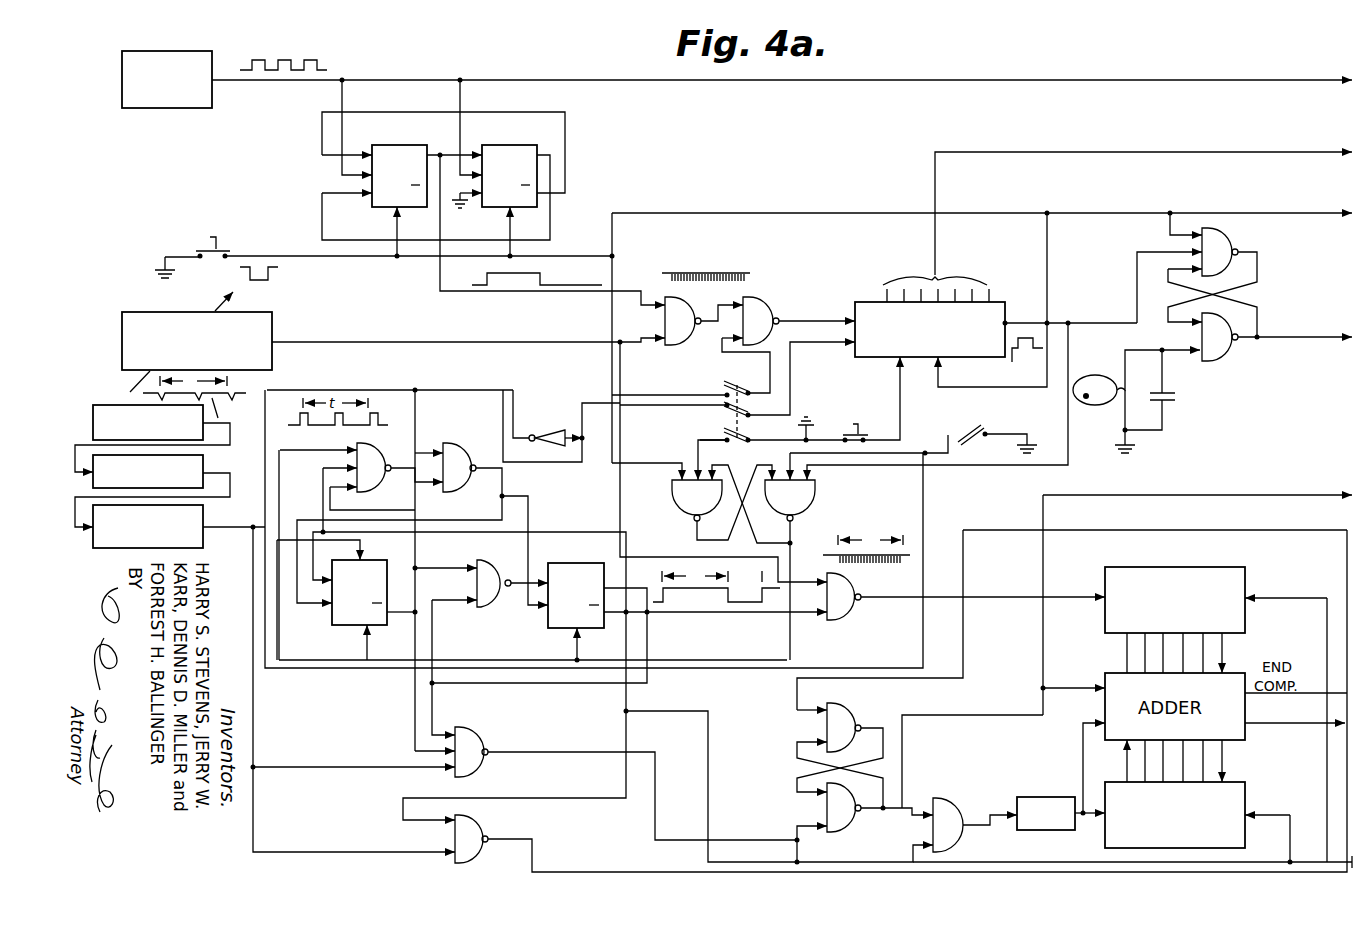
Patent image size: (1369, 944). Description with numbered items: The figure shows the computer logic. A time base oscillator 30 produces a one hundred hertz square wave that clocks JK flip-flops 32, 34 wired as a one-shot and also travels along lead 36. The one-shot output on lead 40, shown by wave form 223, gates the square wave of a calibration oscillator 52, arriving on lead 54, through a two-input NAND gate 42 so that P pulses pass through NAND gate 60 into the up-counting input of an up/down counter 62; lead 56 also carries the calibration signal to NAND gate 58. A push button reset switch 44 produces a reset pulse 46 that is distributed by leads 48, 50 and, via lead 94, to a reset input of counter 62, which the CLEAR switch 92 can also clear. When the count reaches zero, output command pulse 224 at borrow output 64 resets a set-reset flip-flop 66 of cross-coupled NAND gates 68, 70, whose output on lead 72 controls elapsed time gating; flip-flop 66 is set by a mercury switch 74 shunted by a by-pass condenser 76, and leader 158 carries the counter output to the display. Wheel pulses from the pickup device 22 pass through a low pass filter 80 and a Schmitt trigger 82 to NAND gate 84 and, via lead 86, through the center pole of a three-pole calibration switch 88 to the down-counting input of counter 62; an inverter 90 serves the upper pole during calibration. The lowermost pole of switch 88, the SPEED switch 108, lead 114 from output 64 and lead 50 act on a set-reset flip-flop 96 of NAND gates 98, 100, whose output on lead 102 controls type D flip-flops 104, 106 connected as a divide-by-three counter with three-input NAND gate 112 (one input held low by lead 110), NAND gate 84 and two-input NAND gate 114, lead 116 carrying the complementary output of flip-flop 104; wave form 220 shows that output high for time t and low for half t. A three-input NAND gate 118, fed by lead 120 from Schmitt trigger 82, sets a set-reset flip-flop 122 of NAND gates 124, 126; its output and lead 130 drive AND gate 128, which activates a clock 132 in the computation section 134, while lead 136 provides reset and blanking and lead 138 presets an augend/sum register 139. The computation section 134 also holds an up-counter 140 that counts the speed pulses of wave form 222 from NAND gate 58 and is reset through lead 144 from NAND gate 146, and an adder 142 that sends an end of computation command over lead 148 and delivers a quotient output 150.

The pickup device 22 is at (111, 401).
The time base oscillator 30 is at (148, 50).
The JK flip-flop 32 is at (392, 130).
The JK flip-flop 34 is at (502, 130).
The lead 36 is at (1188, 66).
The lead 40 is at (440, 283).
The 2-input NAND gate 42 is at (663, 322).
The reset switch 44 is at (194, 250).
The reset pulse 46 is at (280, 281).
The reset lead 48 is at (1309, 210).
The lead 50 is at (612, 334).
The calibration oscillator 52 is at (138, 311).
The lead 54 is at (478, 343).
The lead 56 is at (610, 496).
The 2-input NAND gate 58 is at (855, 613).
The 2-input NAND gate 60 is at (772, 290).
The up/down counter 62 is at (986, 301).
The borrow output 64 is at (1030, 323).
The set-reset flip-flop 66 is at (1228, 226).
The NAND gate 68 is at (1235, 248).
The NAND gate 70 is at (1234, 362).
The lead 72 is at (1313, 320).
The mercury switch 74 is at (1108, 372).
The high frequency by-pass condenser 76 is at (1176, 401).
The low pass filter 80 is at (205, 471).
The Schmitt trigger 82 is at (205, 522).
The 2-input NAND gate 84 is at (468, 437).
The lead 86 is at (550, 463).
The calibration switch 88 is at (750, 390).
The inverter 90 is at (567, 422).
The CLEAR push button switch 92 is at (868, 433).
The lead 94 is at (942, 387).
The set-reset flip-flop 96 is at (818, 499).
The NAND gate 98 is at (674, 500).
The NAND gate 100 is at (816, 492).
The lead 102 is at (690, 661).
The type D flip-flop 104 is at (545, 627).
The type D flip-flop 106 is at (367, 628).
The SPEED switch 108 is at (953, 446).
The lead 110 is at (376, 668).
The 3-input NAND gate 112 is at (378, 488).
The 2-input NAND gate 114 is at (1020, 470).
The lead 116 is at (580, 532).
The 3-input NAND gate 118 is at (477, 718).
The lead 120 is at (253, 750).
The set-reset flip-flop 122 is at (852, 705).
The NAND gate 124 is at (849, 700).
The NAND gate 126 is at (857, 827).
The 2-input AND gate 128 is at (953, 795).
The lead 130 is at (708, 788).
The clock 132 is at (1066, 795).
The computation section 134 is at (1282, 584).
The lead 136 is at (1256, 497).
The lead 138 is at (995, 846).
The augend/sum register 139 is at (1240, 782).
The up-counter 140 is at (1173, 567).
The adder 142 is at (1105, 710).
The lead 144 is at (1327, 792).
The 2-input NAND gate 146 is at (484, 830).
The lead 148 is at (1171, 531).
The quotient output 150 is at (1300, 726).
The leader 158 is at (1299, 155).
The wave form 220 is at (665, 594).
The wave form 222 is at (866, 564).
The wave form 223 is at (540, 285).
The output command pulse 224 is at (1020, 362).